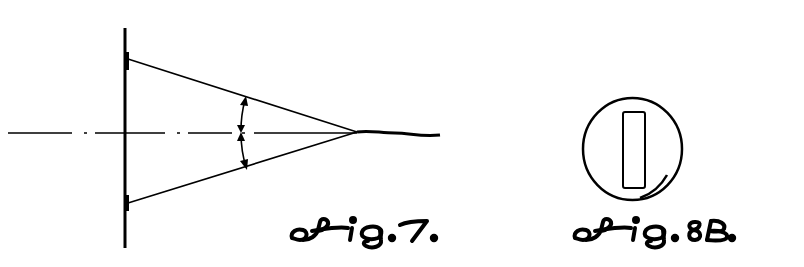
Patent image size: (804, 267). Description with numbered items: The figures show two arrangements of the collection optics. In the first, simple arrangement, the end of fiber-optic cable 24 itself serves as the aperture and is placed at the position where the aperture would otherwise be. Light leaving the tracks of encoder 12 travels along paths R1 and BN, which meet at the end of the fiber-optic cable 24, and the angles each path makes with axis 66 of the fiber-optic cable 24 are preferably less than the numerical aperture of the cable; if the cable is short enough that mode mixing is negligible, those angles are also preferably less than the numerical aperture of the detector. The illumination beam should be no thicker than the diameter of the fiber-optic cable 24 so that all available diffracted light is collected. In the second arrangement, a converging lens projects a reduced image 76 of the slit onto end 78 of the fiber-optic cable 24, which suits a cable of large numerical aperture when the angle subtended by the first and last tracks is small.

In FIG. 7, the encoder 12 is at (119, 37).
In FIG. 7, the axis 66 is at (54, 131).
In FIG. 7, the fiber-optic cable 24 is at (398, 129).
In FIG. 8B, the fiber-optic cable 24 is at (663, 111).
In FIG. 7, the path R1 is at (242, 95).
In FIG. 7, the path BN is at (242, 167).
In FIG. 8B, the reduced image 76 is at (637, 147).
In FIG. 8B, the end of fiber-optic cable 78 is at (668, 178).